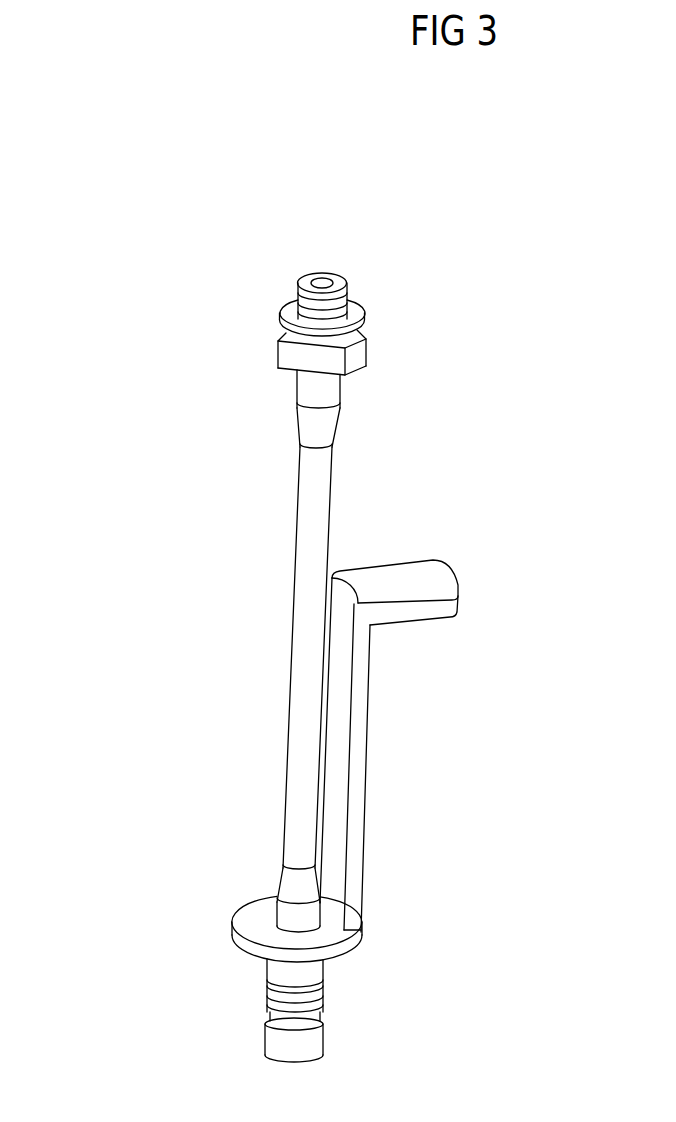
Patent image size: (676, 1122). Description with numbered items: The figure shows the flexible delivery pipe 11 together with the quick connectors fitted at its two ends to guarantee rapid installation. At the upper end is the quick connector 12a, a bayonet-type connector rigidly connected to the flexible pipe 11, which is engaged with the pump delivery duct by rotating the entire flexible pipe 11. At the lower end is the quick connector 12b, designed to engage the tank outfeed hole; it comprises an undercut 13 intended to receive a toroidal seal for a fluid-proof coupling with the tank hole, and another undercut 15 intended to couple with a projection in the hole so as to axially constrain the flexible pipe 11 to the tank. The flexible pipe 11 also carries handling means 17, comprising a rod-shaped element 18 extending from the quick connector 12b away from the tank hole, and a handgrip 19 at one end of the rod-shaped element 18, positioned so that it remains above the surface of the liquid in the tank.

The flexible delivery pipe 11 is at (297, 550).
The quick connector 12a is at (288, 307).
The quick connector 12b is at (260, 928).
The undercut 13 is at (267, 995).
The undercut 15 is at (282, 1018).
The handling means 17 is at (368, 760).
The rod-shaped element 18 is at (364, 832).
The handgrip 19 is at (400, 587).